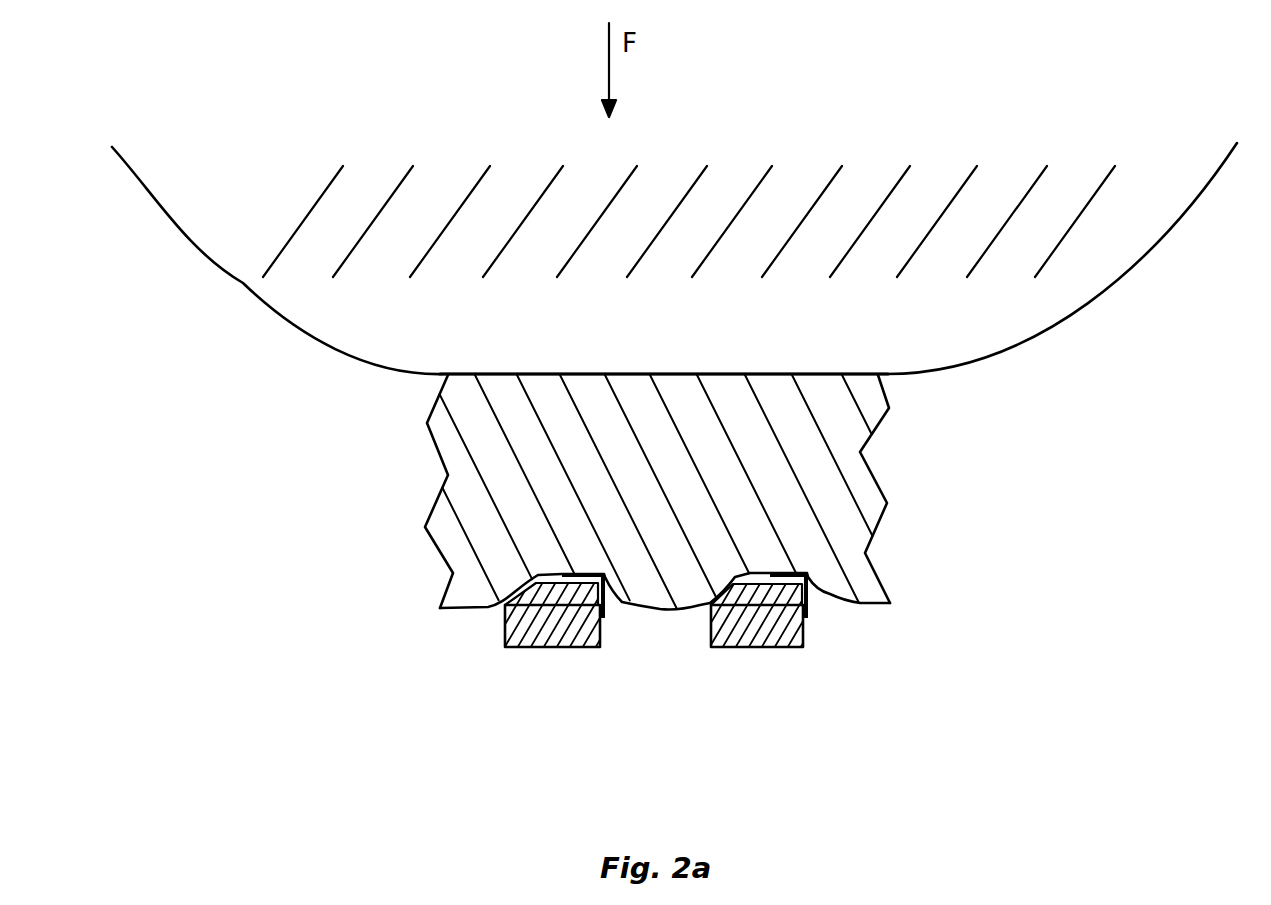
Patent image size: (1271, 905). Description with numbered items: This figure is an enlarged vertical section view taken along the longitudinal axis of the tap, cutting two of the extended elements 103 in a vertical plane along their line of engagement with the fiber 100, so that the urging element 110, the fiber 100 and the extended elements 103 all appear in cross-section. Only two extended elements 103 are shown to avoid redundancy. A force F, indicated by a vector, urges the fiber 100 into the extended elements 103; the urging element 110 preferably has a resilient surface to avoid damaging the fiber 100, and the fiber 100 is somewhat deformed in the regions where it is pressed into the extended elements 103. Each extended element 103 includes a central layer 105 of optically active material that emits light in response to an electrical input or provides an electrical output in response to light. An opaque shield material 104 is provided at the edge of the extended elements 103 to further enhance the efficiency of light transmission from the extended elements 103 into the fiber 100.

The fiber 100 is at (890, 527).
The extended elements 103 is at (538, 648).
The opaque shield material 104 is at (616, 602).
The central layer 105 is at (537, 585).
The urging element 110 is at (183, 233).